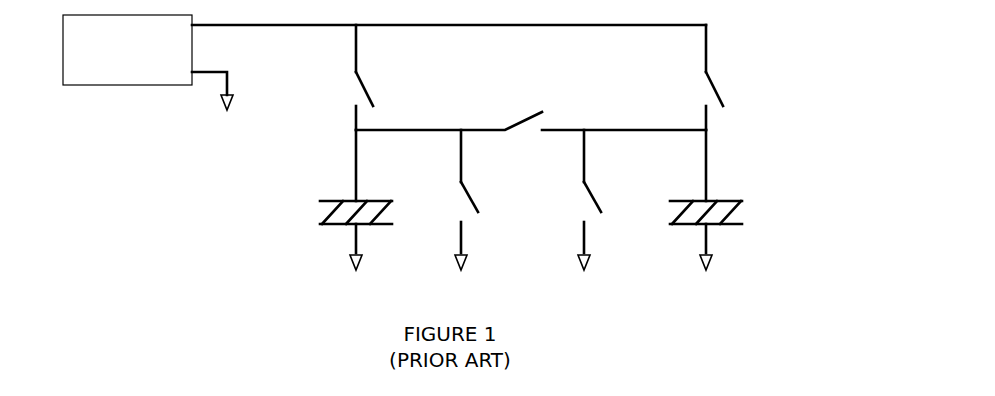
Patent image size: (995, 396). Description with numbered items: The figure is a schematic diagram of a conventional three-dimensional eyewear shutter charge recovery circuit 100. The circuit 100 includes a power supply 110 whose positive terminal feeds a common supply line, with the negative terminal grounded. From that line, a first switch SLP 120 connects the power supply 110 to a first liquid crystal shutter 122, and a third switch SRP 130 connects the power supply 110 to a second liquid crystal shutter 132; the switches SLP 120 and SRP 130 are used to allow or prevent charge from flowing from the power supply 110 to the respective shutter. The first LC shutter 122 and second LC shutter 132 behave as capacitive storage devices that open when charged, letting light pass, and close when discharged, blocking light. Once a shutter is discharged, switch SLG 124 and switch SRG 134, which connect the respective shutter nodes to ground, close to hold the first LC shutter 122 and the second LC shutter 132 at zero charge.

The shutter charge recovery circuit 100 is at (143, 213).
The power supply 110 is at (143, 99).
The first switch SLP 120 is at (342, 96).
The first liquid crystal shutter 122 is at (296, 213).
The switch SLG 124 is at (448, 213).
The third switch SRP 130 is at (683, 96).
The second liquid crystal shutter 132 is at (753, 212).
The fourth switch SRG 134 is at (566, 213).